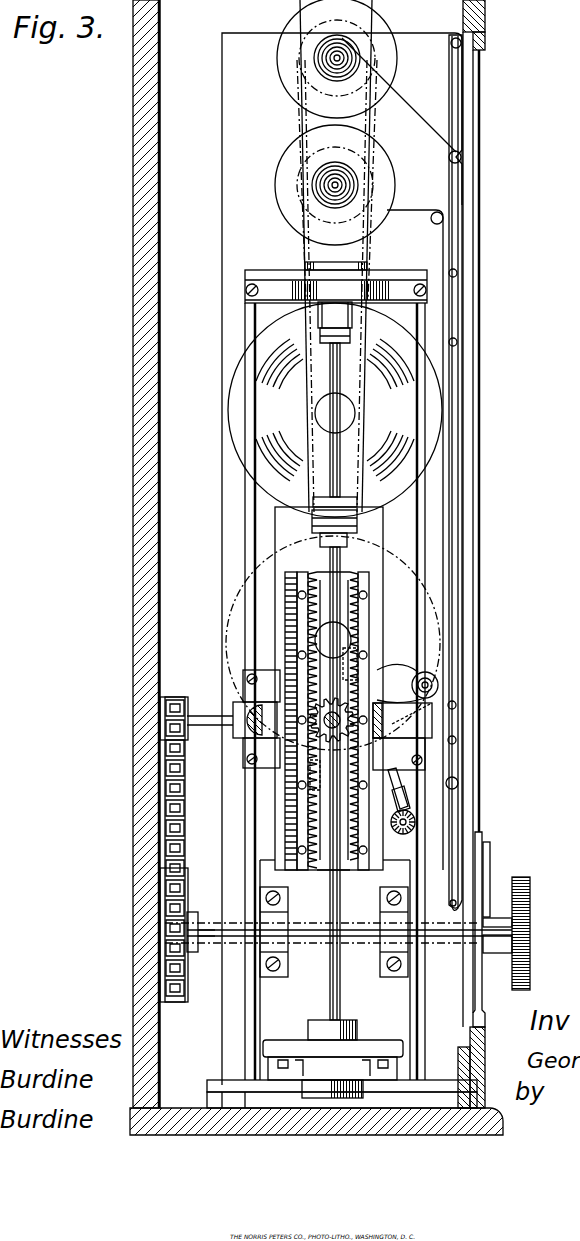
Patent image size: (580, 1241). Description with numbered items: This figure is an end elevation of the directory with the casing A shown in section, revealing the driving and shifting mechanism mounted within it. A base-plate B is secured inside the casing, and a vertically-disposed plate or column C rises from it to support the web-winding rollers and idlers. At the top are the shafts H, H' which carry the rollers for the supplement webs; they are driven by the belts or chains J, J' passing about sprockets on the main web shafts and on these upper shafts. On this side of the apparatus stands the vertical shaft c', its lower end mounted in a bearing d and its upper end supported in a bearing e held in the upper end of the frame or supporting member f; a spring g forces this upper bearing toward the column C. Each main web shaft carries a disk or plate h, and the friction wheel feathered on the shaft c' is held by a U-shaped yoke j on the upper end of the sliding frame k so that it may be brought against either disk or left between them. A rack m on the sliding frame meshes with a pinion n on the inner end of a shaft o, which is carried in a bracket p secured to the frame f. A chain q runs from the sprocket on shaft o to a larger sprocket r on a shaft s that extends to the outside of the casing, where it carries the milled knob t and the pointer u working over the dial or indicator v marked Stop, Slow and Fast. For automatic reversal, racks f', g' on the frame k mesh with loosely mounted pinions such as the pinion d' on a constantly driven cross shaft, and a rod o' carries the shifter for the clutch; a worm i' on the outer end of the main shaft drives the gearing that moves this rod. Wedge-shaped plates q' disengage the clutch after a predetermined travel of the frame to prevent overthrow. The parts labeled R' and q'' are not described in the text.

The casing A is at (492, 14).
The base-plate B is at (207, 1086).
The vertically-disposed plates or columns C is at (342, 559).
The shaft H is at (343, 59).
The shaft H' is at (353, 185).
The belt or chain J is at (313, 256).
The belt or chain J' is at (316, 180).
The lever bar R' is at (402, 472).
The upper bearing e is at (367, 265).
The spring g is at (342, 275).
The frame or supporting member f is at (310, 691).
The shaft c' is at (350, 661).
The disk or plate h is at (334, 526).
The U-shaped member or yoke j is at (328, 497).
The sliding frame k is at (329, 688).
The worm i' is at (357, 528).
The rack m is at (291, 578).
The rack g' is at (333, 709).
The rack f' is at (328, 720).
The wedge-shaped plate q' is at (377, 658).
The pawl q'' is at (330, 767).
The pinion d' is at (332, 708).
The bracket p is at (256, 704).
The pinion n is at (261, 751).
The shaft o is at (210, 708).
The rod o' is at (407, 749).
The chain q is at (179, 830).
The sprocket r is at (190, 905).
The shaft s is at (212, 946).
The bearing d is at (333, 1054).
The milled head or knob t is at (530, 902).
The pointer u is at (490, 862).
The dial or indicator v is at (488, 834).